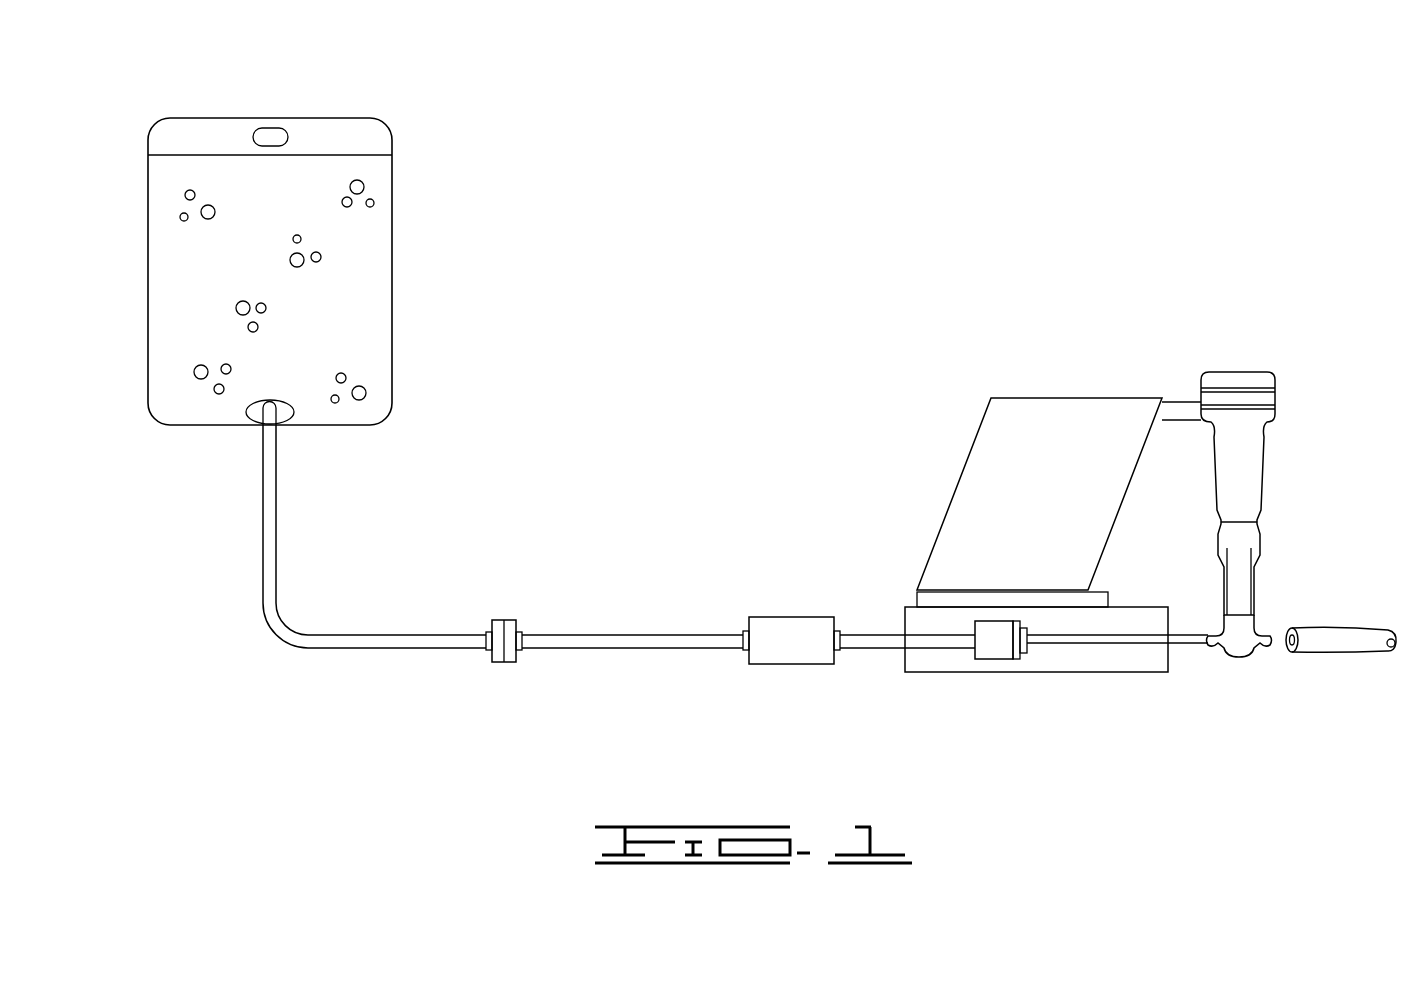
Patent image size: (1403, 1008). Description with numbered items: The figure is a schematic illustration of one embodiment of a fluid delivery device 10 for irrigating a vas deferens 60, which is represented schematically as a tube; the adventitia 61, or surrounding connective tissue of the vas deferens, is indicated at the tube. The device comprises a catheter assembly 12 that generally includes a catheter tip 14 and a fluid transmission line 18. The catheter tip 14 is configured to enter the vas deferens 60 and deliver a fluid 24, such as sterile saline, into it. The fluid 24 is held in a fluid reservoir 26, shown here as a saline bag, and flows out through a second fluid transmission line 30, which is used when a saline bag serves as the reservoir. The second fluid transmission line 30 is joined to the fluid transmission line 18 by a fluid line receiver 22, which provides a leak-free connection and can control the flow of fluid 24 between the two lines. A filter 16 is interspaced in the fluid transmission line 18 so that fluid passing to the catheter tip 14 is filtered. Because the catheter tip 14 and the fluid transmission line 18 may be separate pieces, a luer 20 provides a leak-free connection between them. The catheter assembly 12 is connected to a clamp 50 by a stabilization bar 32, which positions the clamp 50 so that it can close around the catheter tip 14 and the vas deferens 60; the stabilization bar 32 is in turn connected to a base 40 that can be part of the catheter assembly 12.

The fluid delivery device 10 is at (788, 410).
The catheter assembly 12 is at (1041, 692).
The catheter tip 14 is at (1192, 634).
The filter 16 is at (775, 617).
The fluid transmission line 18 is at (630, 649).
The luer 20 is at (988, 660).
The fluid line receiver 22 is at (497, 620).
The fluid 24 is at (358, 233).
The fluid reservoir 26 is at (181, 117).
The second fluid transmission line 30 is at (343, 649).
The stabilization bar 32 is at (1030, 398).
The base 40 is at (1150, 673).
The clamp 50 is at (1268, 372).
The vas deferens 60 is at (1330, 656).
The adventitia 61 is at (1293, 630).